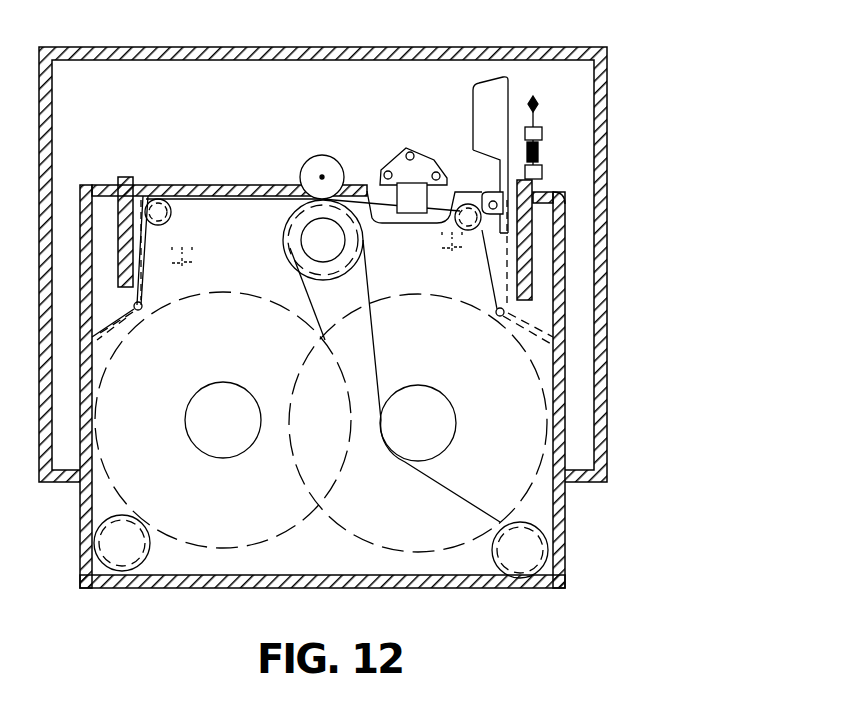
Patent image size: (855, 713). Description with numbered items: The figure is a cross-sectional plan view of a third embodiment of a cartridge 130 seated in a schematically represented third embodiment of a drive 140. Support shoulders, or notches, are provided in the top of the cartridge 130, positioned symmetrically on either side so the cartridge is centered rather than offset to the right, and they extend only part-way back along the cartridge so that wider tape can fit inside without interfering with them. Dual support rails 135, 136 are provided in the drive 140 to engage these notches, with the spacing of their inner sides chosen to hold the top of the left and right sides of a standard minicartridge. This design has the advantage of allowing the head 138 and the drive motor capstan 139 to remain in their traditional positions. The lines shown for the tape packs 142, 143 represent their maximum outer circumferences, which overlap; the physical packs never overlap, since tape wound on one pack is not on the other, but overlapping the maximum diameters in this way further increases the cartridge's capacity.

The cartridge 130 is at (574, 532).
The top support rail 135 is at (129, 176).
The top support rail 136 is at (533, 264).
The head 138 is at (408, 210).
The drive motor capstan 139 is at (311, 159).
The drive 140 is at (512, 45).
The tape pack 142 is at (222, 294).
The tape pack 143 is at (533, 367).